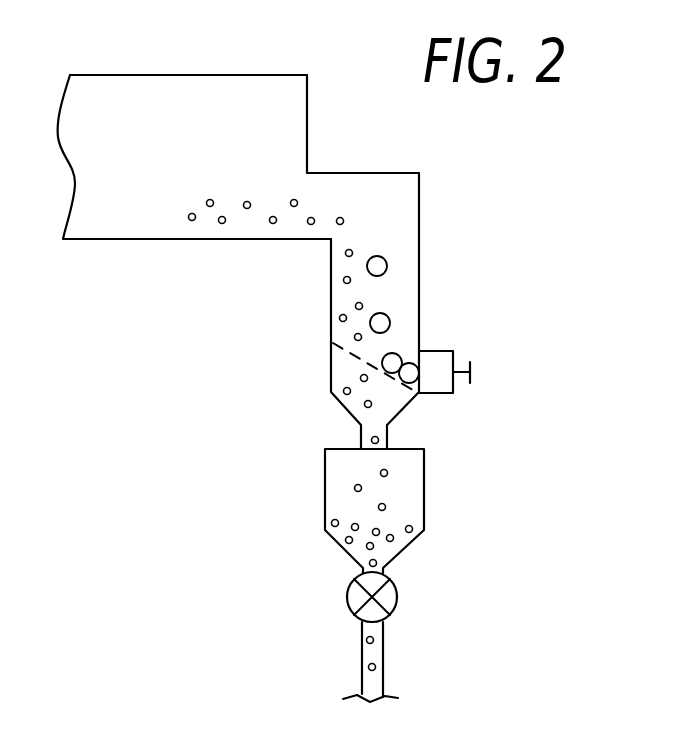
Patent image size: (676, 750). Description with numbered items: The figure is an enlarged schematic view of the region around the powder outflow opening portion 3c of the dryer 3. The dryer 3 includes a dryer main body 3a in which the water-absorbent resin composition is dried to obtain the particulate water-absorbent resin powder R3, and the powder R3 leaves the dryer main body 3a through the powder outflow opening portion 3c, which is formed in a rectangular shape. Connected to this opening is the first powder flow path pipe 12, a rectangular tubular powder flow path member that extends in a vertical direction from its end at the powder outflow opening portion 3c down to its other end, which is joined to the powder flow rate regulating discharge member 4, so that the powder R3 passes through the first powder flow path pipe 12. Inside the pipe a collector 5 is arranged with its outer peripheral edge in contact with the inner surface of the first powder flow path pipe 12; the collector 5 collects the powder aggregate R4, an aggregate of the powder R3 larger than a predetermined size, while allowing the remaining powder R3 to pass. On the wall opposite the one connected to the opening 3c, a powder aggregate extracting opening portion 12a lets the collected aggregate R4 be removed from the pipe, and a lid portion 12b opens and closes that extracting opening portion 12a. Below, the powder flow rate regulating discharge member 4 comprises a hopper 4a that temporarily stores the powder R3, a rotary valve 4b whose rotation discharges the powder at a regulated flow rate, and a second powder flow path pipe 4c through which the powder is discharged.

The dryer 3 is at (263, 40).
The dryer main body 3a is at (140, 87).
The powder outflow opening portion 3c is at (298, 188).
The first powder flow path pipe 12 is at (419, 222).
The powder aggregate extracting opening portion 12a is at (418, 365).
The lid portion 12b is at (445, 362).
The collector 5 is at (345, 350).
The water-absorbent resin powder R3 is at (343, 318).
The powder aggregate R4 is at (380, 265).
The powder flow rate regulating discharge member 4 is at (438, 575).
The hopper 4a is at (424, 492).
The rotary valve 4b is at (387, 600).
The second powder flow path pipe 4c is at (423, 655).